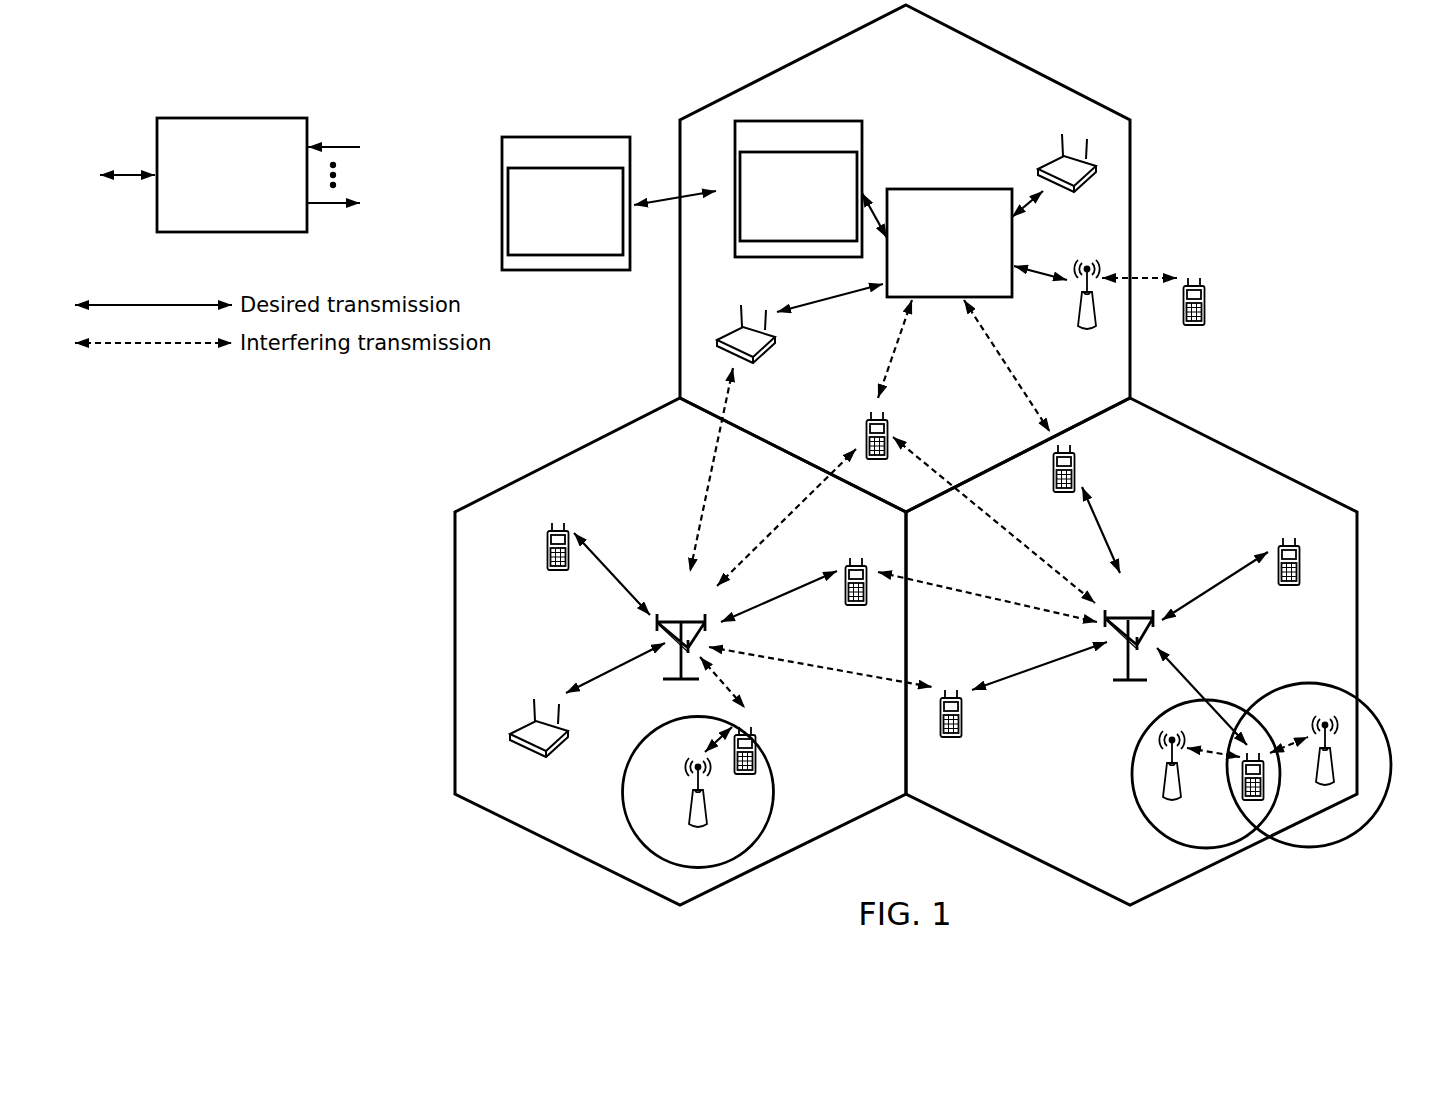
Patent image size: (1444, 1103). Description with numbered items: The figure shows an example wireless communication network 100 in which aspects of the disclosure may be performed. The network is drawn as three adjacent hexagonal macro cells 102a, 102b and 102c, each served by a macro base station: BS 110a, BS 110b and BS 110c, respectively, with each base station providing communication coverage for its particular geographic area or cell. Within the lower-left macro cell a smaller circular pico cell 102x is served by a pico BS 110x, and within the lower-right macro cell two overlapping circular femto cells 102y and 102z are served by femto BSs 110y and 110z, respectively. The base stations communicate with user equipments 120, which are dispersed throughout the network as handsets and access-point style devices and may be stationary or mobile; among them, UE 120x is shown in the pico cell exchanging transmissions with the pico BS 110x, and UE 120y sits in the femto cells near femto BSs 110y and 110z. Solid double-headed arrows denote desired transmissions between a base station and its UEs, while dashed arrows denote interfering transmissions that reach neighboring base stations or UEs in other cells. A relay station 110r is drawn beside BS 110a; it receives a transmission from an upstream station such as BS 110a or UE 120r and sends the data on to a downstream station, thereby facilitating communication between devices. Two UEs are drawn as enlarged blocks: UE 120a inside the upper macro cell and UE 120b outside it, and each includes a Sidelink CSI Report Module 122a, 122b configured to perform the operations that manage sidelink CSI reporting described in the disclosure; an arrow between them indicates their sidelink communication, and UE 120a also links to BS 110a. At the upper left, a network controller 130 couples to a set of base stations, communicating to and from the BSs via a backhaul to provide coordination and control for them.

The wireless communication network 100 is at (1280, 78).
The macro cell 102a is at (1008, 58).
The macro cell 102b is at (565, 454).
The macro cell 102c is at (1239, 450).
The pico cell 102x is at (645, 736).
The femto cell 102y is at (1140, 739).
The femto cell 102z is at (1300, 681).
The macro base station 110a is at (932, 189).
The macro base station 110b is at (675, 618).
The macro base station 110c is at (1126, 618).
The relay station 110r is at (1077, 320).
The pico base station 110x is at (709, 820).
The femto base station 110y is at (1181, 795).
The femto base station 110z is at (1334, 780).
The user equipment 120 is at (1062, 154).
The user equipment 120a is at (771, 174).
The user equipment 120b is at (533, 189).
The user equipment 120r is at (1205, 315).
The user equipment 120x is at (770, 746).
The user equipment 120y is at (1242, 797).
The Sidelink CSI Report Module 122a is at (740, 217).
The Sidelink CSI Report Module 122b is at (508, 227).
The network controller 130 is at (226, 119).